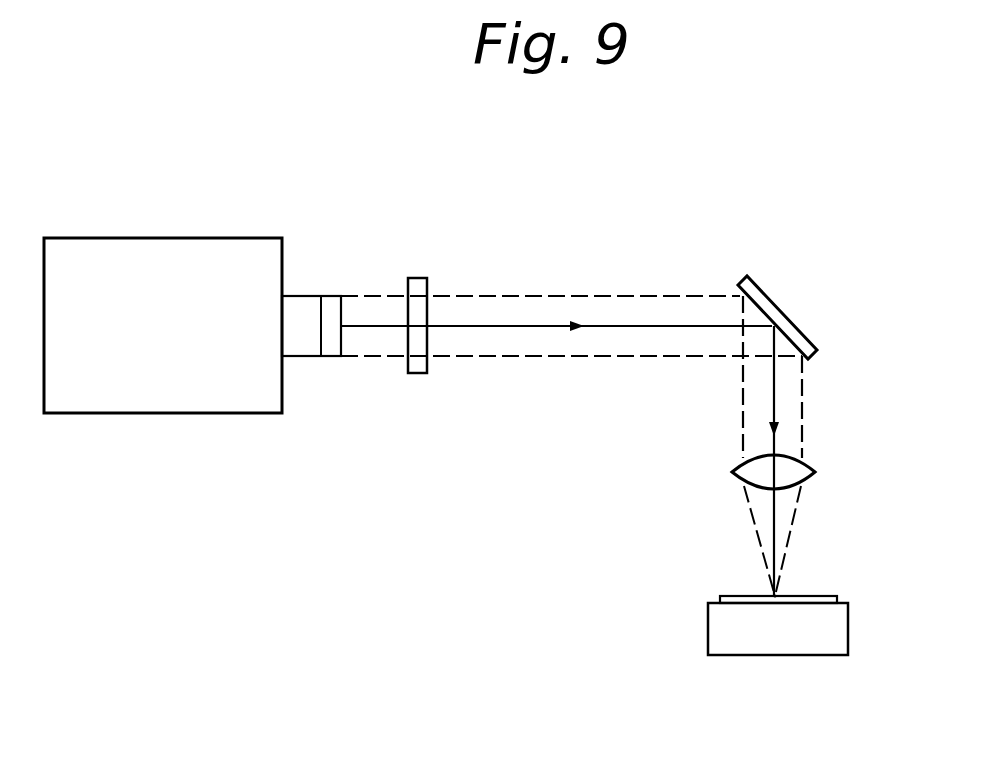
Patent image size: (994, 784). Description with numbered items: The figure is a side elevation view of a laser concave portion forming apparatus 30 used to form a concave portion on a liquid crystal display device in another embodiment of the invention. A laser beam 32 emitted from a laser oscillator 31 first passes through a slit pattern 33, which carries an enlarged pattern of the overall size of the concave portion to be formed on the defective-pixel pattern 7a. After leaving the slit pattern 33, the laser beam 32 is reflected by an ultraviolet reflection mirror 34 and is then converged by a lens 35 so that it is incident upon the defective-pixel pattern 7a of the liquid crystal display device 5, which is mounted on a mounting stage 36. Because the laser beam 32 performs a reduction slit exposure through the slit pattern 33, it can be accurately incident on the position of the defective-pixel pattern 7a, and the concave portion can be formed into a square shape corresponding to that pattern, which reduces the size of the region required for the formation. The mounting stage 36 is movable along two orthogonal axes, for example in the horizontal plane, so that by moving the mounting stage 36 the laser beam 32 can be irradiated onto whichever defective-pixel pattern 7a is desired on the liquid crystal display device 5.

The laser concave portion forming apparatus 30 is at (618, 220).
The laser oscillator 31 is at (250, 250).
The laser beam 32 is at (522, 326).
The slit pattern 33 is at (410, 278).
The ultraviolet reflection mirror 34 is at (783, 322).
The lens 35 is at (790, 455).
The mounting stage 36 is at (722, 630).
The liquid crystal display device 5 is at (720, 600).
The defective-pixel pattern 7a is at (776, 594).